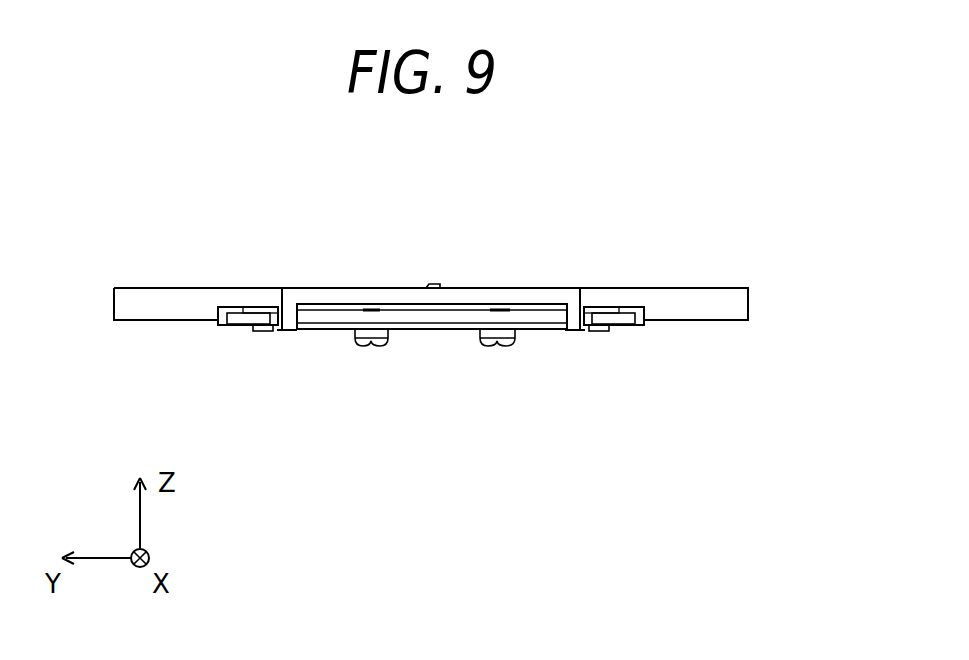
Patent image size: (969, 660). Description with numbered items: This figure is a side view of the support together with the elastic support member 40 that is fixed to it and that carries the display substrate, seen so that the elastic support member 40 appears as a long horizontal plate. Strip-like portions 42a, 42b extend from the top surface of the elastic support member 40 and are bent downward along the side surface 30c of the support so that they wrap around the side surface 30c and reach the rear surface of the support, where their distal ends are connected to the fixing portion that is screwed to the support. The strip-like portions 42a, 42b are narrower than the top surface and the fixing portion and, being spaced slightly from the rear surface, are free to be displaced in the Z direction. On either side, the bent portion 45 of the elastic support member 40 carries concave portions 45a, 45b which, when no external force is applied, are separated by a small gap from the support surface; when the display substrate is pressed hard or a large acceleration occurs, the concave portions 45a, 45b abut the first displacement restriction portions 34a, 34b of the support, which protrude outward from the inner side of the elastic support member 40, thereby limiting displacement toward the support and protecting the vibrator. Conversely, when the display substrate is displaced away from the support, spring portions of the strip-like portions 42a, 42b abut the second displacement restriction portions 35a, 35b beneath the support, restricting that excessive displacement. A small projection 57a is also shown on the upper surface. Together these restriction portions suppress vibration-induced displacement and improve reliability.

The elastic support member 40 is at (725, 288).
The bent portion 45 is at (158, 302).
The first displacement restriction portion 34a is at (637, 310).
The first displacement restriction portion 34b is at (228, 308).
The concave portion 45a is at (600, 310).
The concave portion 45b is at (262, 308).
The strip-like portion 42a is at (577, 317).
The strip-like portion 42b is at (288, 312).
The side surface 30c is at (425, 320).
The second displacement restriction portion 35a is at (533, 330).
The second displacement restriction portion 35b is at (327, 330).
The protruding portion 57a is at (433, 285).